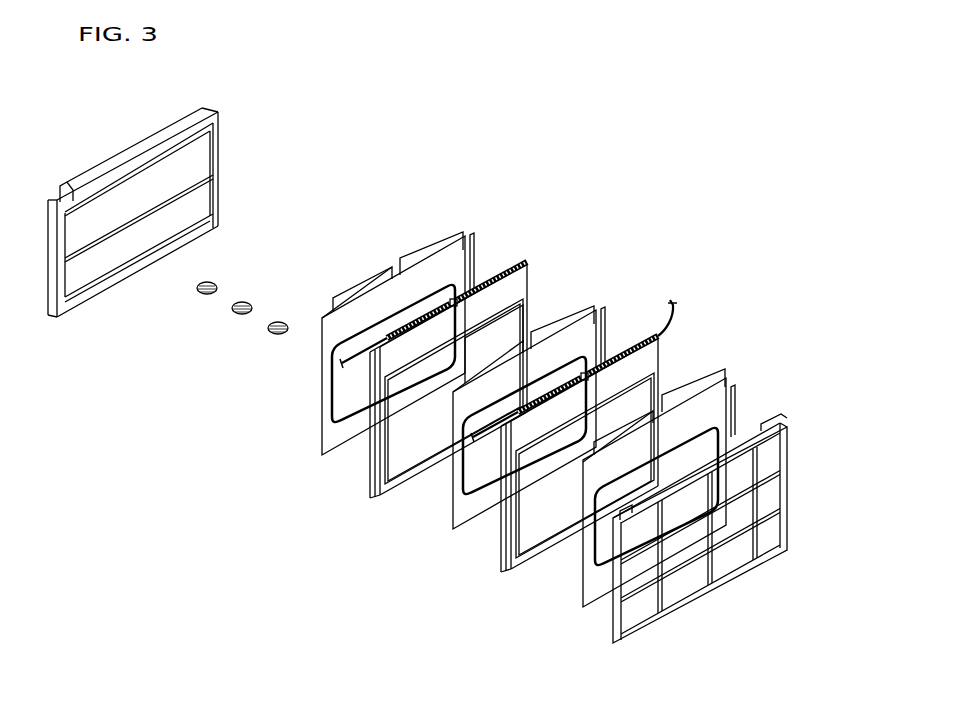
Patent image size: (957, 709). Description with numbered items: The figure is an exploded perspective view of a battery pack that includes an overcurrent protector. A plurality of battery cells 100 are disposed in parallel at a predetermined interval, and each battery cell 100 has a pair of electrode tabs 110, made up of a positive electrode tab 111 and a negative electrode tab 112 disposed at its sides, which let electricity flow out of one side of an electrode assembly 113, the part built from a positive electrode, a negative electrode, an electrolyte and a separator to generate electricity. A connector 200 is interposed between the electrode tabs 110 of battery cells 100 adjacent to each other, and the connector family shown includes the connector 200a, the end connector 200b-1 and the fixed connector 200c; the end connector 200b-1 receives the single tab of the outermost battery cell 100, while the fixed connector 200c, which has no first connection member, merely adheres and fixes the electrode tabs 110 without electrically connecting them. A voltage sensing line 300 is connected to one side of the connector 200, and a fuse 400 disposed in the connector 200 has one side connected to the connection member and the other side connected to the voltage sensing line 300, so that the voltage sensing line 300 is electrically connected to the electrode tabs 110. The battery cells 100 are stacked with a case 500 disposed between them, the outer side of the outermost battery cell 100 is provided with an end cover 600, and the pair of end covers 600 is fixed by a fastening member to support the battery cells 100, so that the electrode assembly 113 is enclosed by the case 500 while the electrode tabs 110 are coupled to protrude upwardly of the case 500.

The battery cell 100 is at (316, 459).
The electrode tab 110 is at (559, 302).
The positive electrode tab 111 is at (383, 268).
The negative electrode tab 112 is at (428, 249).
The electrode assembly 113 is at (452, 288).
The connector 200 is at (532, 345).
The connector 200a is at (417, 322).
The end connector 200b-1 is at (597, 327).
The fixed connector 200c is at (493, 270).
The voltage sensing line 300 is at (357, 370).
The fuse 400 is at (498, 381).
The case 500 is at (368, 490).
The end cover 600 is at (50, 318).